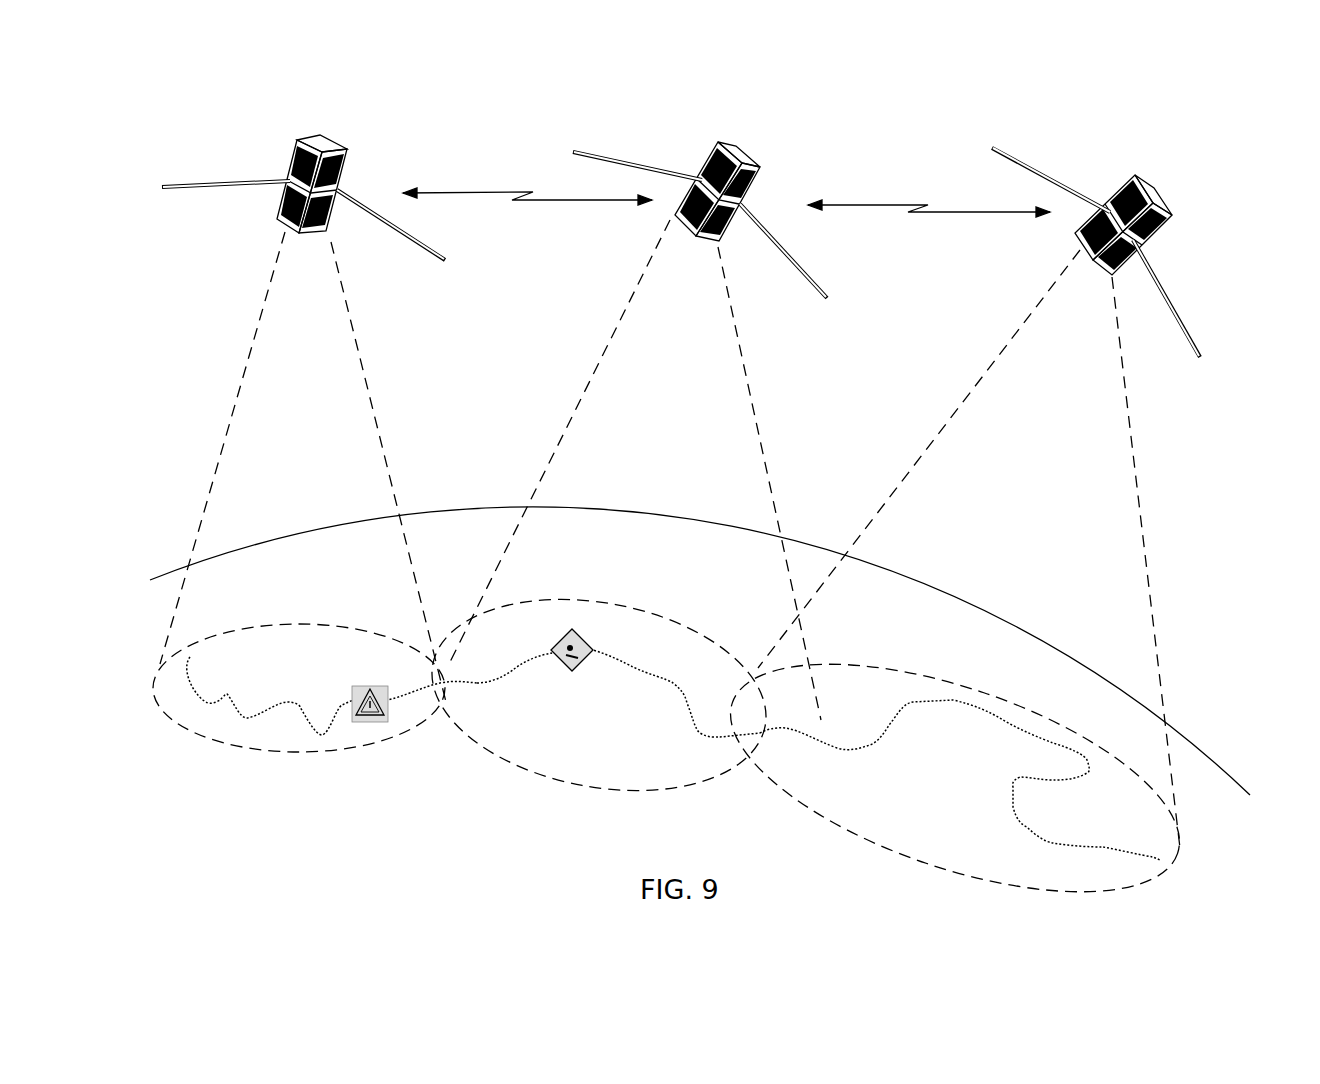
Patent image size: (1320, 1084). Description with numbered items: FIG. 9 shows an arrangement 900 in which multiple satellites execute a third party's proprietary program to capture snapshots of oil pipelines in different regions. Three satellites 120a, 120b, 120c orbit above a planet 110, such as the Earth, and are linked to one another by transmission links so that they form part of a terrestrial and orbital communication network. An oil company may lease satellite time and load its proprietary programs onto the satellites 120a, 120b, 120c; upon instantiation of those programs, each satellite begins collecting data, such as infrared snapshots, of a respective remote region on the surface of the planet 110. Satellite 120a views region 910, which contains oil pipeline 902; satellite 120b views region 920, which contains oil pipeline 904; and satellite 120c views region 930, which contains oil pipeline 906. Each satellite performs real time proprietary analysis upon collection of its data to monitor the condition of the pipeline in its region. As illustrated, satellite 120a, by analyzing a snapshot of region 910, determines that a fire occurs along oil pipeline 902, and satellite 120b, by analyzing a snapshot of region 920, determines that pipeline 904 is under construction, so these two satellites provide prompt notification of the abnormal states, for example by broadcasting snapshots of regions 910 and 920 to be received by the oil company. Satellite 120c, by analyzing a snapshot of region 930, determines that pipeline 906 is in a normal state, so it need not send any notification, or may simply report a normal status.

The satellite monitoring system 900 is at (186, 121).
The satellite 120a is at (297, 140).
The satellite 120b is at (718, 142).
The satellite 120c is at (1135, 175).
The planet 110 is at (432, 512).
The region 910 is at (303, 624).
The region 920 is at (597, 600).
The region 930 is at (920, 669).
The oil pipeline 902 is at (295, 700).
The oil pipeline 904 is at (686, 700).
The oil pipeline 906 is at (1020, 778).